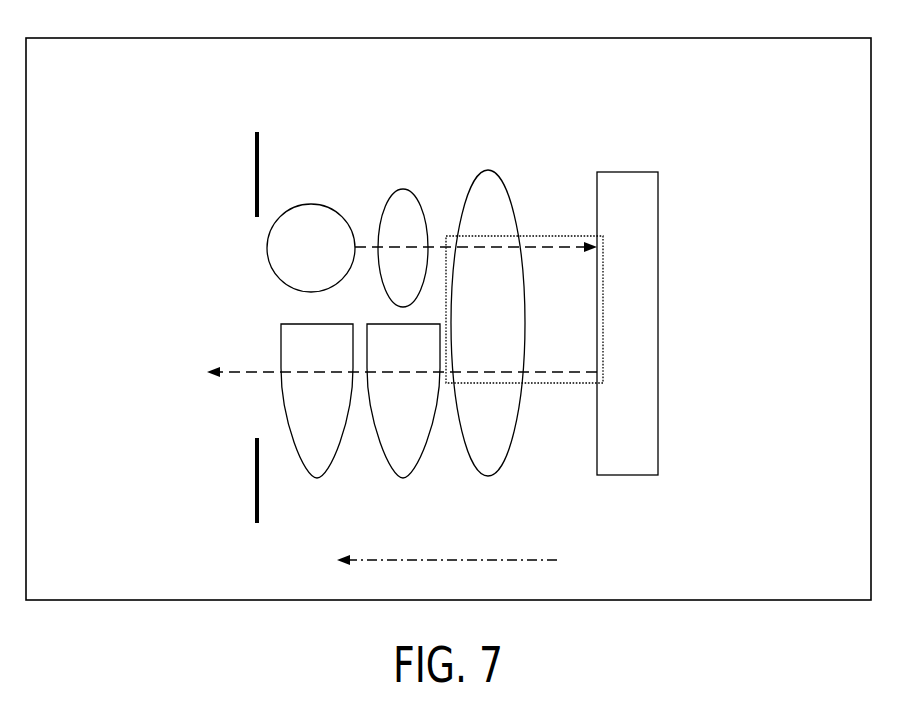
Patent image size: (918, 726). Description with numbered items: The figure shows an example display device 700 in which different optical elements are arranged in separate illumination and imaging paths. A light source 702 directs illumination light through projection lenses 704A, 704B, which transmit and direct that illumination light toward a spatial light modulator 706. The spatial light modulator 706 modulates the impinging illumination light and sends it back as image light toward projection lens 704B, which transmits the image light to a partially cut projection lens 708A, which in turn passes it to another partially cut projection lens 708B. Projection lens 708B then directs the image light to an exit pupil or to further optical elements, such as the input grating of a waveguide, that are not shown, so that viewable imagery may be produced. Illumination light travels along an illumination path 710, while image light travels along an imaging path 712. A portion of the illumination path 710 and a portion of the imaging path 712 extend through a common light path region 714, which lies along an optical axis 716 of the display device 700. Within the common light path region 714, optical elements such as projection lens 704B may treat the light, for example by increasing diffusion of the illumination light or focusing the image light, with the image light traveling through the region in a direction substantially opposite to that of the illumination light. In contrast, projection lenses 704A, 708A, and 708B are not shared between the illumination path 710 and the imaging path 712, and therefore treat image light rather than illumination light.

The display device 700 is at (684, 216).
The light source 702 is at (328, 260).
The projection lens 704A is at (406, 189).
The projection lens 704B is at (499, 176).
The spatial light modulator 706 is at (644, 329).
The partially cut projection lens 708A is at (403, 478).
The partially cut projection lens 708B is at (317, 478).
The illumination path 710 is at (566, 262).
The imaging path 712 is at (571, 388).
The common light path region 714 is at (537, 235).
The optical axis 716 is at (557, 560).